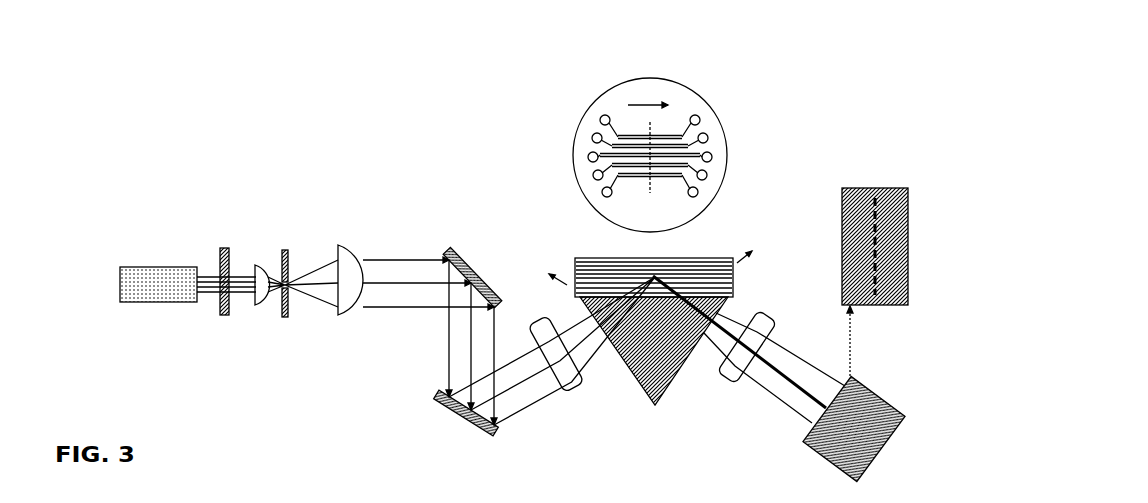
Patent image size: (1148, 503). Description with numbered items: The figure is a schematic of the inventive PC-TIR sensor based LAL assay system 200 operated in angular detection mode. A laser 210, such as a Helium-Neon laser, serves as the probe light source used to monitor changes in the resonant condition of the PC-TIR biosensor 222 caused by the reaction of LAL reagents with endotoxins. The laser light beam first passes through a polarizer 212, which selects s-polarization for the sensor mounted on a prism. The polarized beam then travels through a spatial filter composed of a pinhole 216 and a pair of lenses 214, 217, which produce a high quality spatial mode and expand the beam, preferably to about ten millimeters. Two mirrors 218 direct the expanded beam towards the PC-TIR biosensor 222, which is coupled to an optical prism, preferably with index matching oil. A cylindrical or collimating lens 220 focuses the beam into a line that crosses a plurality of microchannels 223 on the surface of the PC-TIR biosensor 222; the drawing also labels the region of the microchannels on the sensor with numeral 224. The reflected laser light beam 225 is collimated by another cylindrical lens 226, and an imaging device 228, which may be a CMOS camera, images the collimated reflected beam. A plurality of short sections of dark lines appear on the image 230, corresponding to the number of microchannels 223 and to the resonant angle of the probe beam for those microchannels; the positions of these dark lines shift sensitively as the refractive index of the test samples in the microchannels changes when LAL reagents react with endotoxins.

The LAL assay system 200 is at (172, 156).
The laser 210 is at (120, 277).
The polarizer 212 is at (218, 260).
The lens 214 is at (268, 265).
The pinhole 216 is at (292, 316).
The lens 217 is at (350, 250).
The mirror 218 is at (447, 252).
The cylindrical lens 220 is at (578, 368).
The PC-TIR biosensor 222 is at (615, 255).
The microchannels 223 is at (590, 156).
The microchannels on sensor 224 is at (737, 258).
The reflected laser light beam 225 is at (712, 343).
The cylindrical lens 226 is at (765, 325).
The imaging device 228 is at (890, 437).
The image 230 is at (908, 250).